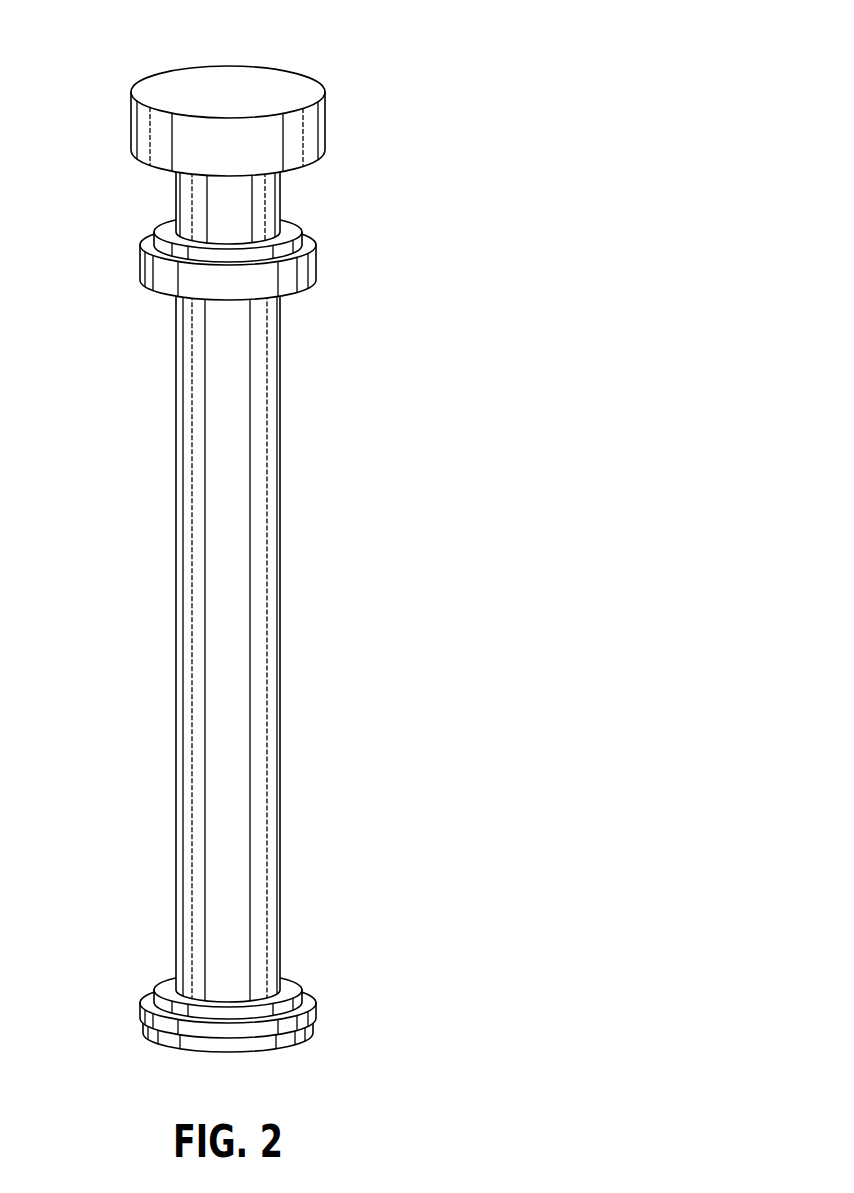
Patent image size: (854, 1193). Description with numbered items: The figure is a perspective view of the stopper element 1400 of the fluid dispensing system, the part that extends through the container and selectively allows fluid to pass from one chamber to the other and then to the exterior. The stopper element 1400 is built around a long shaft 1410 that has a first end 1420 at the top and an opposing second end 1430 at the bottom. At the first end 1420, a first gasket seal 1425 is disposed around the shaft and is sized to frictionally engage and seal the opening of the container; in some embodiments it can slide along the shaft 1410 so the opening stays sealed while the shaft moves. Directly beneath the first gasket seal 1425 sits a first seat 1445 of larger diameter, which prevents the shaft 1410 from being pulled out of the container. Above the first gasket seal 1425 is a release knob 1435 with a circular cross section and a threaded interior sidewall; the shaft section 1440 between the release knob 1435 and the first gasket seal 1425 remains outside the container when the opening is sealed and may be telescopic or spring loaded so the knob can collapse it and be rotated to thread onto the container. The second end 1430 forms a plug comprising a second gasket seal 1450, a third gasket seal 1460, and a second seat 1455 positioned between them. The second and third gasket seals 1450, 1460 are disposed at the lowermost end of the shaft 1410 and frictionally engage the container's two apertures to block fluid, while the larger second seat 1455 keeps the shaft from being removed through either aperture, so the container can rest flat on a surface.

The stopper element 1400 is at (283, 560).
The shaft 1410 is at (273, 468).
The first end 1420 is at (223, 152).
The first gasket seal 1425 is at (288, 225).
The second end 1430 is at (248, 1022).
The release knob 1435 is at (272, 78).
The shaft section 1440 is at (177, 186).
The first seat 1445 is at (313, 263).
The second gasket seal 1450 is at (163, 992).
The second seat 1455 is at (140, 1010).
The third gasket seal 1460 is at (270, 1050).